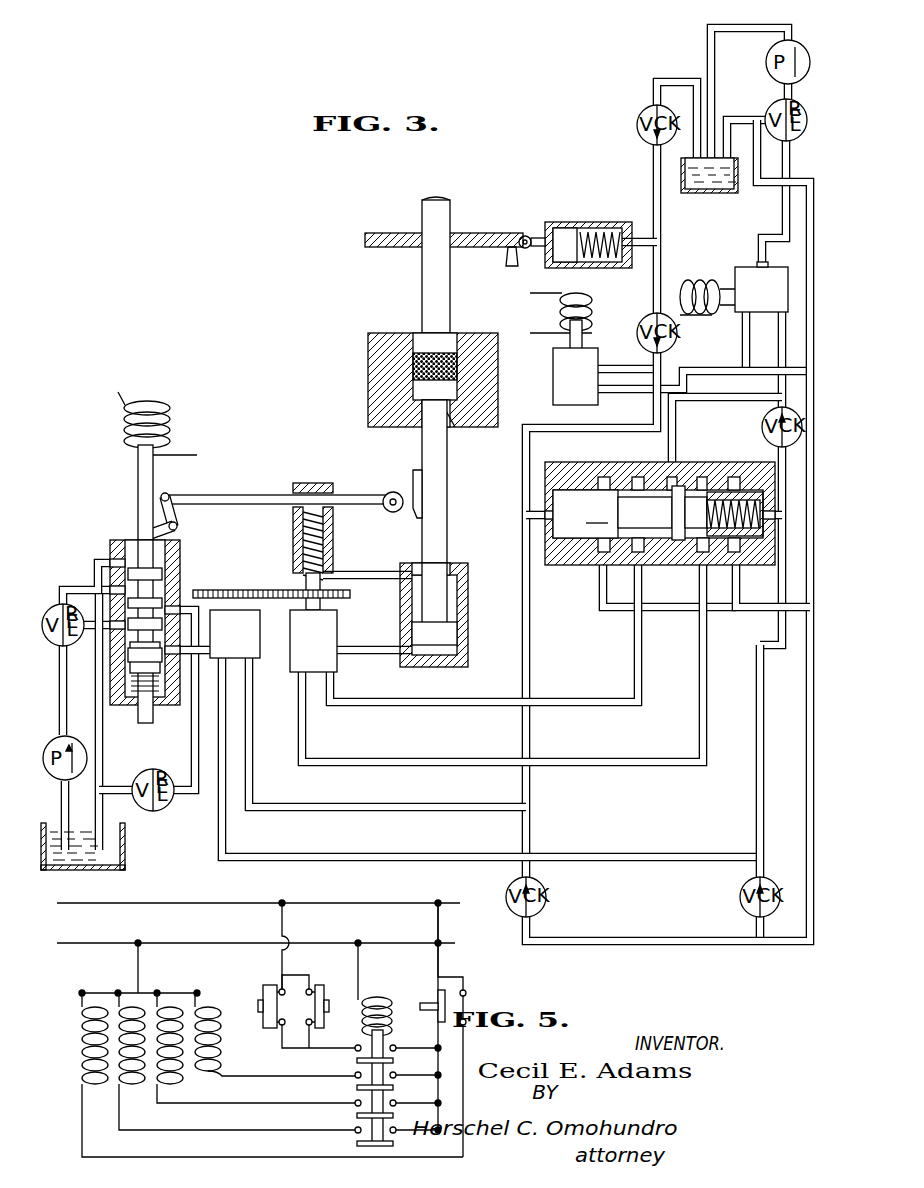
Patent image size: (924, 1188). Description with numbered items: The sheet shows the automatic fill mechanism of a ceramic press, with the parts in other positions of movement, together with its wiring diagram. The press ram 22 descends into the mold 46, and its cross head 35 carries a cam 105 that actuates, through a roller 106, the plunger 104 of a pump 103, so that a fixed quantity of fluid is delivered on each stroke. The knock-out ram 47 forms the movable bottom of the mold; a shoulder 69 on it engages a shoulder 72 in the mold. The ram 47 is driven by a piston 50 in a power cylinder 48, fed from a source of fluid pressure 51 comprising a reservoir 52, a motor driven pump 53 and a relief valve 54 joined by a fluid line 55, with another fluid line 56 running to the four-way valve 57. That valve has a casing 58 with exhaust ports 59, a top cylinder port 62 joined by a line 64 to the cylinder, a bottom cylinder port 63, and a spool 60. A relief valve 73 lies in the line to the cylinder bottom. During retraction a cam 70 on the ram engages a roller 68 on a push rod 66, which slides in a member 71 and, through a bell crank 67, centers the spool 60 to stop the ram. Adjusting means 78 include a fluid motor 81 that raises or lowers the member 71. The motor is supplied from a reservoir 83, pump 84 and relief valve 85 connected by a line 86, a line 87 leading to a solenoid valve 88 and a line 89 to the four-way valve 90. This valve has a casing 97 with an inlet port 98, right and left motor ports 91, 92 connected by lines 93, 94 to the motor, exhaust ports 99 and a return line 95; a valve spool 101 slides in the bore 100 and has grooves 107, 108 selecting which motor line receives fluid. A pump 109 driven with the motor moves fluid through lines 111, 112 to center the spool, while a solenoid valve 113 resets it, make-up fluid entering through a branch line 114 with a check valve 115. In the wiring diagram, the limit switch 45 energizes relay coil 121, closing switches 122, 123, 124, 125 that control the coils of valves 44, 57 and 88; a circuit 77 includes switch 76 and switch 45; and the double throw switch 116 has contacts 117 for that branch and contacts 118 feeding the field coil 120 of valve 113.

In FIG. 3, the ram 22 is at (450, 218).
In FIG. 3, the cross head 35 is at (392, 247).
In FIG. 5, the solenoid valve 44 is at (220, 1048).
In FIG. 5, the limit switch 45 is at (267, 988).
In FIG. 3, the mold 46 is at (407, 392).
In FIG. 3, the knock-out ram 47 is at (447, 474).
In FIG. 3, the power cylinder 48 is at (413, 615).
In FIG. 3, the piston 50 is at (424, 644).
In FIG. 3, the source of fluid pressure 51 is at (105, 858).
In FIG. 3, the reservoir 52 is at (80, 870).
In FIG. 3, the motor driven pump 53 is at (48, 745).
In FIG. 3, the relief valve 54 is at (55, 615).
In FIG. 3, the fluid line 55 is at (61, 692).
In FIG. 3, the fluid line 56 is at (78, 588).
In FIG. 3, the four-way valve 57 is at (124, 437).
In FIG. 5, the four-way valve 57 is at (182, 1084).
In FIG. 3, the casing 58 is at (165, 570).
In FIG. 3, the exhaust ports 59 is at (160, 615).
In FIG. 3, the spool 60 is at (140, 520).
In FIG. 3, the top cylinder port 62 is at (165, 600).
In FIG. 3, the bottom cylinder port 63 is at (165, 622).
In FIG. 3, the line 64 is at (262, 590).
In FIG. 3, the push rod 66 is at (240, 495).
In FIG. 3, the bell crank 67 is at (168, 495).
In FIG. 3, the roller 68 is at (393, 512).
In FIG. 3, the shoulder 69 is at (415, 427).
In FIG. 3, the cam 70 is at (413, 482).
In FIG. 3, the member 71 is at (315, 483).
In FIG. 3, the shoulder 72 is at (455, 427).
In FIG. 3, the relief valve 73 is at (153, 770).
In FIG. 5, the switch 76 is at (320, 990).
In FIG. 5, the circuit 77 is at (295, 995).
In FIG. 3, the means to adjust the guide 78 is at (336, 574).
In FIG. 3, the fluid motor 81 is at (302, 653).
In FIG. 3, the reservoir 83 is at (700, 193).
In FIG. 3, the pump 84 is at (768, 47).
In FIG. 3, the relief valve 85 is at (767, 112).
In FIG. 3, the line 86 is at (783, 90).
In FIG. 3, the line 87 is at (790, 182).
In FIG. 3, the solenoid valve 88 is at (735, 275).
In FIG. 5, the solenoid valve 88 is at (135, 1092).
In FIG. 3, the line 89 is at (716, 397).
In FIG. 3, the four-way valve 90 is at (652, 530).
In FIG. 3, the right motor port 91 is at (705, 555).
In FIG. 3, the left motor port 92 is at (640, 555).
In FIG. 3, the line 93 is at (707, 612).
In FIG. 3, the line 94 is at (642, 660).
In FIG. 3, the line 95 is at (745, 610).
In FIG. 3, the casing 97 is at (560, 462).
In FIG. 3, the inlet port 98 is at (690, 486).
In FIG. 3, the exhaust ports 99 is at (600, 555).
In FIG. 3, the bore 100 is at (570, 530).
In FIG. 3, the valve spool 101 is at (590, 490).
In FIG. 3, the pump 103 is at (583, 213).
In FIG. 3, the plunger 104 is at (565, 228).
In FIG. 3, the cam 105 is at (508, 262).
In FIG. 3, the roller 106 is at (524, 236).
In FIG. 3, the groove 107 is at (735, 492).
In FIG. 3, the groove 108 is at (638, 477).
In FIG. 3, the pump 109 is at (216, 655).
In FIG. 3, the combined inlet and outlet line 111 is at (218, 826).
In FIG. 3, the combined inlet and outlet line 112 is at (253, 738).
In FIG. 3, the solenoid valve 113 is at (553, 378).
In FIG. 3, the branch line 114 is at (764, 850).
In FIG. 3, the check valve 115 is at (740, 897).
In FIG. 5, the manually operated switch 116 is at (419, 991).
In FIG. 5, the contacts 117 is at (437, 996).
In FIG. 5, the contacts 118 is at (466, 992).
In FIG. 3, the field coil 120 is at (560, 312).
In FIG. 5, the field coil 120 is at (84, 1025).
In FIG. 5, the relay coil 121 is at (360, 995).
In FIG. 5, the switch 122 is at (393, 1048).
In FIG. 5, the switch 123 is at (393, 1075).
In FIG. 5, the switch 124 is at (393, 1103).
In FIG. 5, the switch 125 is at (393, 1130).